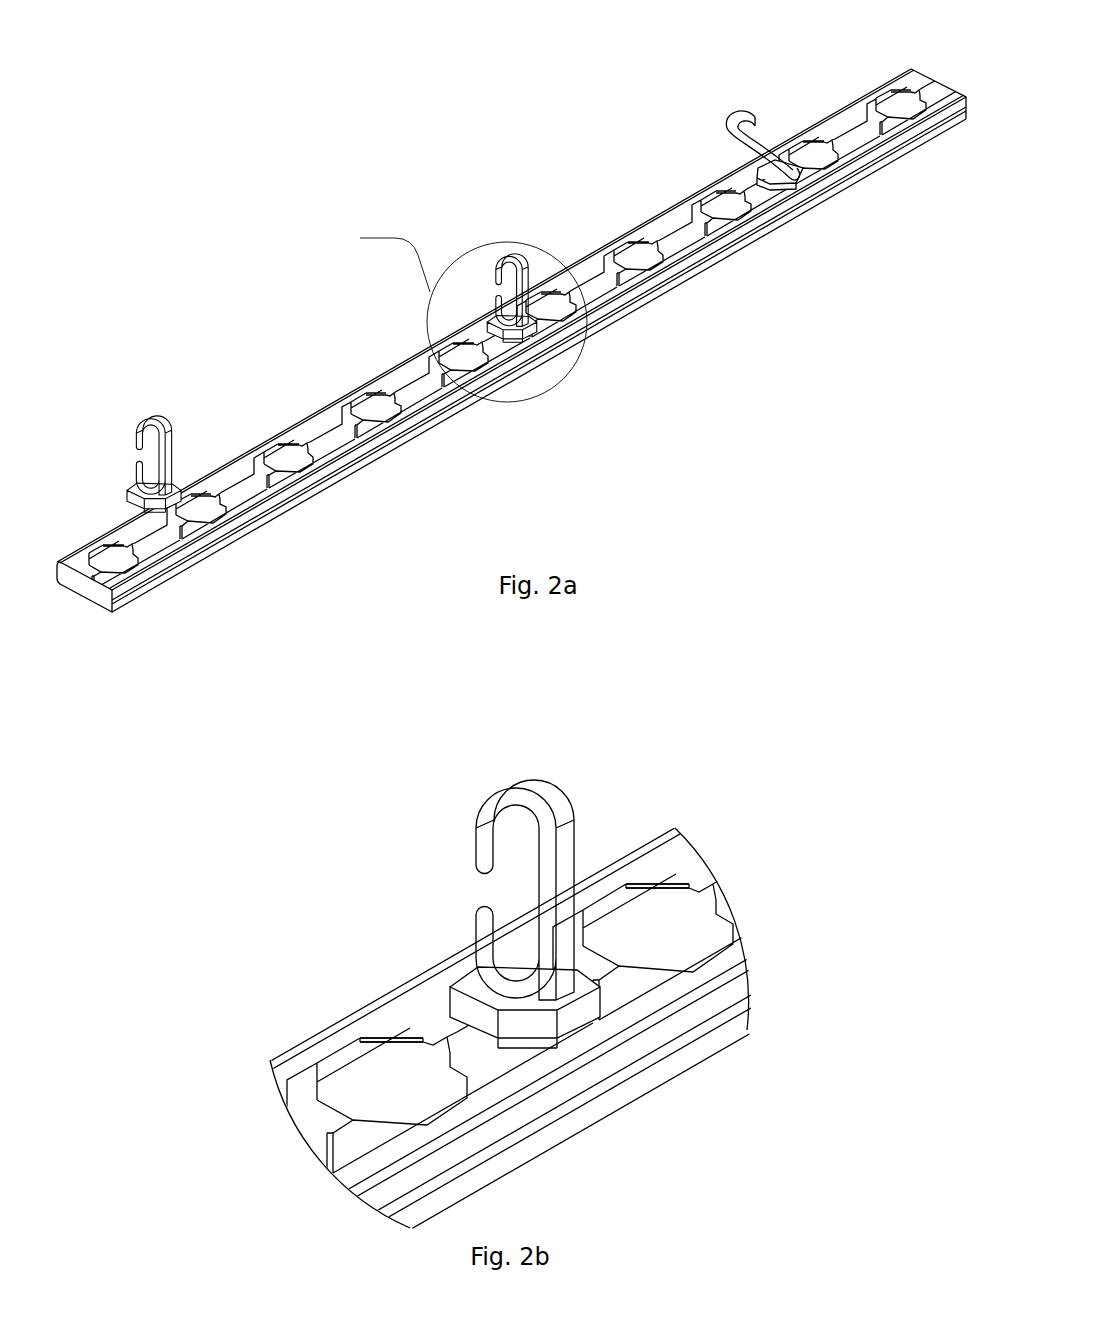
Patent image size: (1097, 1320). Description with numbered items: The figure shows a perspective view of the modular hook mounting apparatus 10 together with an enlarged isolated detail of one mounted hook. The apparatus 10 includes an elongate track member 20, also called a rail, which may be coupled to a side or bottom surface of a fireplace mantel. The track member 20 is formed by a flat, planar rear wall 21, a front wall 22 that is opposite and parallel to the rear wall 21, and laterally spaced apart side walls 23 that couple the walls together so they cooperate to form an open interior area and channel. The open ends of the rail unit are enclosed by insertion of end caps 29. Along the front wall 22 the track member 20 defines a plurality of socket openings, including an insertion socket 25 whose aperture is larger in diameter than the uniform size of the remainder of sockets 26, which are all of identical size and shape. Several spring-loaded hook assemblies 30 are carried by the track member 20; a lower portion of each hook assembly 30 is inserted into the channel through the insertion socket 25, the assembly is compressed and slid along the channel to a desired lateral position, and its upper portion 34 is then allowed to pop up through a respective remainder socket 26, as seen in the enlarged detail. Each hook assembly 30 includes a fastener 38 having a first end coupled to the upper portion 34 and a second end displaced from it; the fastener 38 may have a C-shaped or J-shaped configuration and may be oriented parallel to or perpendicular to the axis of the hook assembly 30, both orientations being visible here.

In FIG. 2A, the modular hook mounting apparatus 10 is at (512, 385).
In FIG. 2A, the track member 20 is at (512, 405).
In FIG. 2B, the track member 20 is at (574, 961).
In FIG. 2A, the rear wall 21 is at (305, 500).
In FIG. 2A, the front wall 22 is at (255, 455).
In FIG. 2B, the front wall 22 is at (378, 990).
In FIG. 2A, the side walls 23 is at (220, 540).
In FIG. 2B, the side walls 23 is at (705, 1018).
In FIG. 2A, the insertion socket 25 is at (152, 545).
In FIG. 2A, the remainder of sockets 26 is at (385, 412).
In FIG. 2B, the remainder of sockets 26 is at (660, 880).
In FIG. 2A, the end caps 29 is at (95, 600).
In FIG. 2A, the hook assembly 30 is at (543, 260).
In FIG. 2B, the hook assembly 30 is at (488, 962).
In FIG. 2A, the upper portion 34 is at (766, 184).
In FIG. 2B, the upper portion 34 is at (470, 992).
In FIG. 2A, the fastener 38 is at (738, 108).
In FIG. 2B, the fastener 38 is at (540, 790).